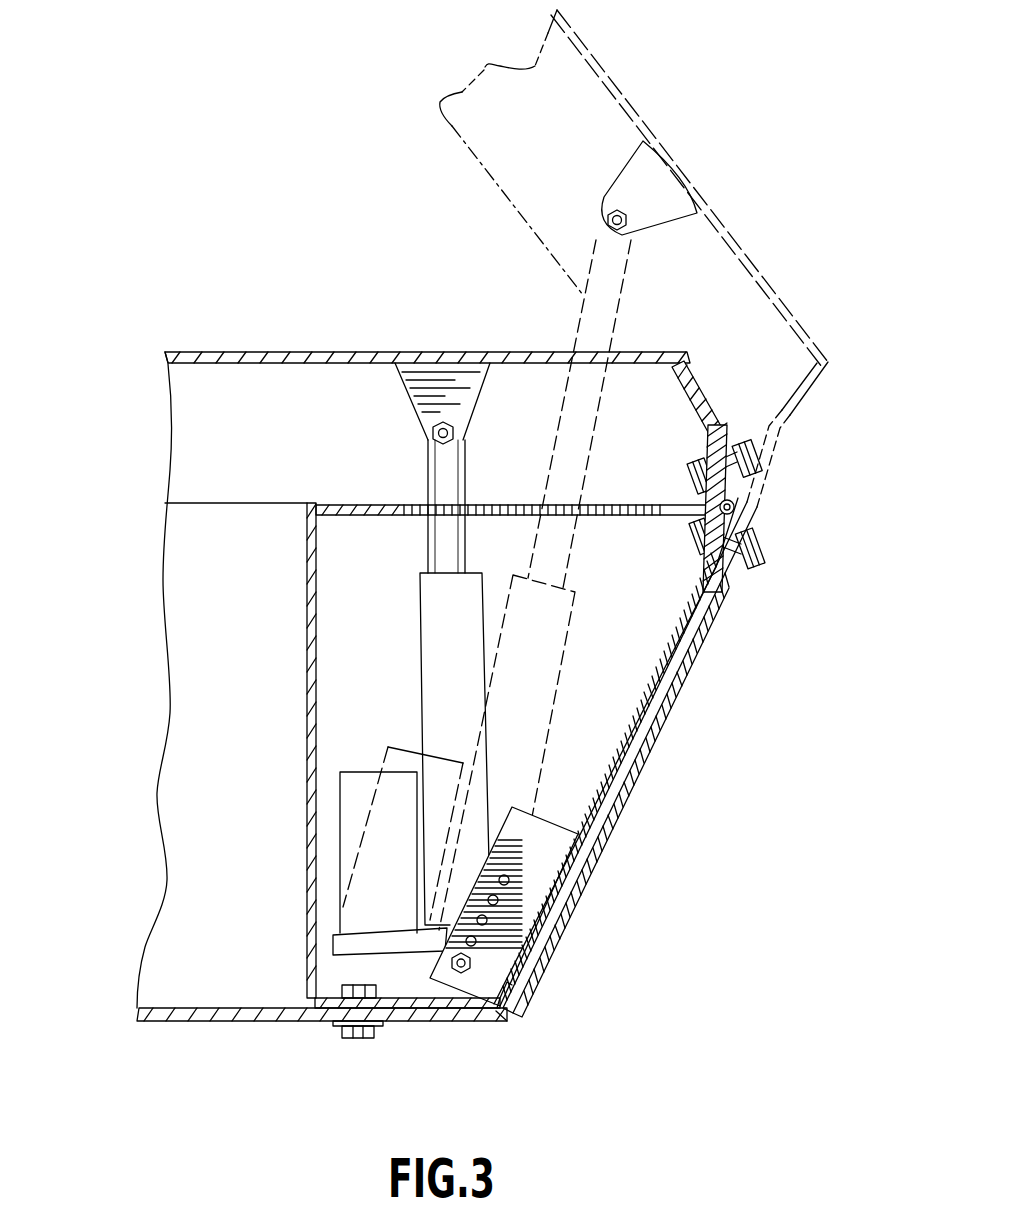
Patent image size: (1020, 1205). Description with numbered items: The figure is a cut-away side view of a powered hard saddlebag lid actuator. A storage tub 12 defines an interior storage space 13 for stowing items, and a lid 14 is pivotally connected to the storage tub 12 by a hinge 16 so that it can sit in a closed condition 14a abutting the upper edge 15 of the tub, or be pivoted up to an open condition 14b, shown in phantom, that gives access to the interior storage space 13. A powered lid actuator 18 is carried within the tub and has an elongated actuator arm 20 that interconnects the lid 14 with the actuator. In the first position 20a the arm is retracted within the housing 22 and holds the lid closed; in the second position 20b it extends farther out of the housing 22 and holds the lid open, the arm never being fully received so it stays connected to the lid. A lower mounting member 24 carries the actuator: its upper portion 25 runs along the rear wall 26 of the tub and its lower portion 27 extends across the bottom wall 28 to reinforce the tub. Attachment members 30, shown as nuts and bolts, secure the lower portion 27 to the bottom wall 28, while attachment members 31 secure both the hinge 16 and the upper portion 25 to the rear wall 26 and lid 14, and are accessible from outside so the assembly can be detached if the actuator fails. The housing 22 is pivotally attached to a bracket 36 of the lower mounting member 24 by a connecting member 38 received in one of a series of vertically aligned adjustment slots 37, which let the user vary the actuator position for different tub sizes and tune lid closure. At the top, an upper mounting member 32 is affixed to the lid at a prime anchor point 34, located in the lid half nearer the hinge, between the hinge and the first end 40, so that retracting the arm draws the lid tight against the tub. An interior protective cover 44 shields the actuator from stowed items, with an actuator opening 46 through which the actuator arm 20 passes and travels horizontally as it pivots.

The storage tub 12 is at (160, 1022).
The interior storage space 13 is at (210, 718).
The lid 14 is at (303, 350).
The closed condition 14a is at (212, 328).
The open condition 14b is at (622, 58).
The upper edge 15 is at (215, 502).
The hinge 16 is at (735, 508).
The powered lid actuator 18 is at (412, 710).
The actuator arm 20 is at (427, 466).
The first position 20a is at (403, 553).
The second position 20b is at (546, 331).
The housing 22 is at (428, 636).
The lower mounting member 24 is at (597, 765).
The upper portion 25 is at (700, 405).
The rear wall 26 is at (688, 650).
The lower portion 27 is at (422, 1013).
The bottom wall 28 is at (474, 1022).
The attachment members 30 is at (343, 1040).
The attachment members 31 is at (765, 447).
The upper mounting member 32 is at (647, 182).
The prime anchor point 34 is at (699, 182).
The bracket 36 is at (557, 855).
The adjustment slots 37 is at (498, 902).
The connecting member 38 is at (471, 965).
The first end 40 is at (798, 418).
The interior protective cover 44 is at (302, 767).
The actuator opening 46 is at (507, 512).